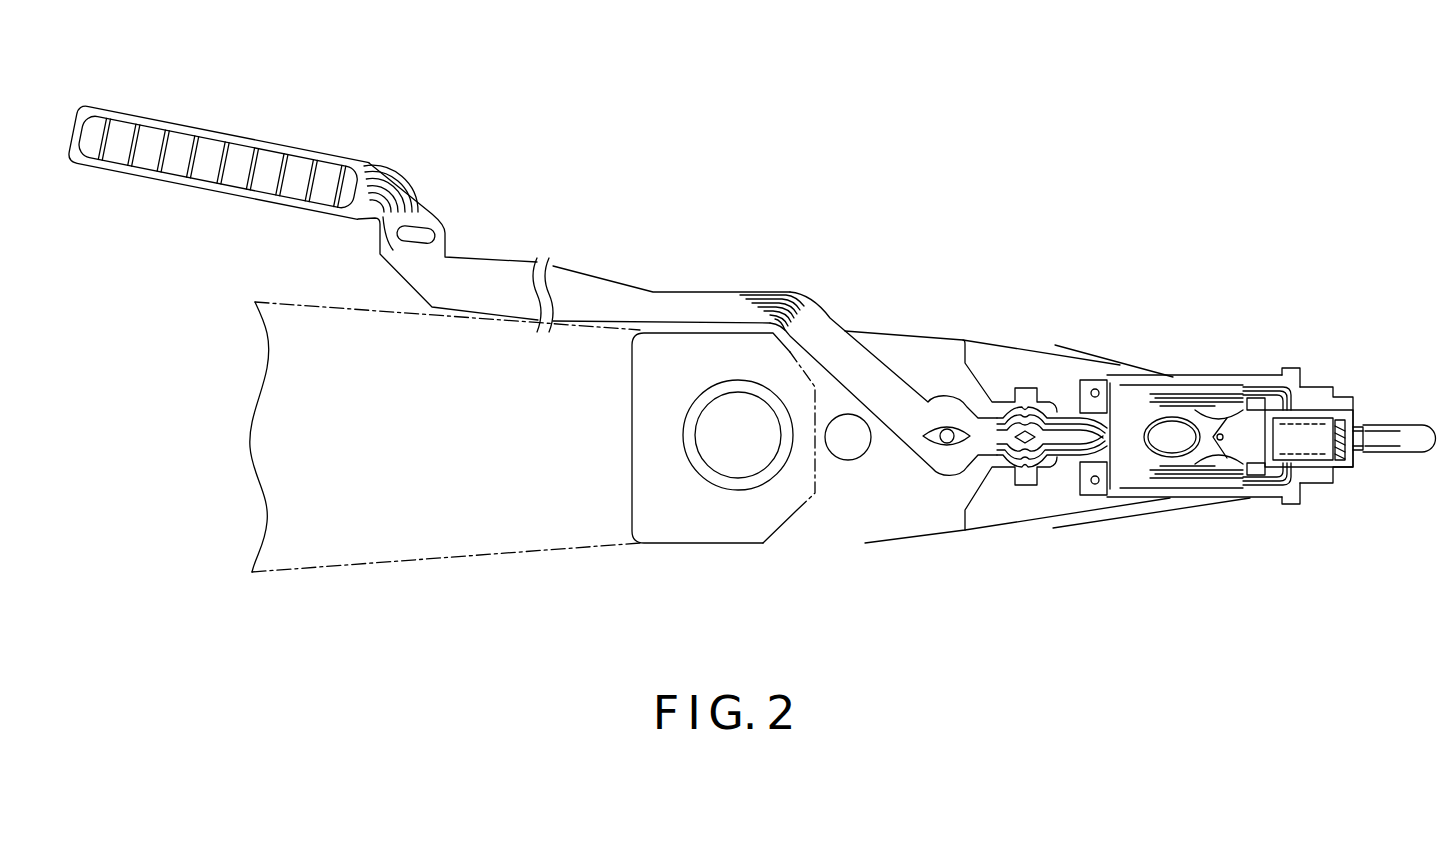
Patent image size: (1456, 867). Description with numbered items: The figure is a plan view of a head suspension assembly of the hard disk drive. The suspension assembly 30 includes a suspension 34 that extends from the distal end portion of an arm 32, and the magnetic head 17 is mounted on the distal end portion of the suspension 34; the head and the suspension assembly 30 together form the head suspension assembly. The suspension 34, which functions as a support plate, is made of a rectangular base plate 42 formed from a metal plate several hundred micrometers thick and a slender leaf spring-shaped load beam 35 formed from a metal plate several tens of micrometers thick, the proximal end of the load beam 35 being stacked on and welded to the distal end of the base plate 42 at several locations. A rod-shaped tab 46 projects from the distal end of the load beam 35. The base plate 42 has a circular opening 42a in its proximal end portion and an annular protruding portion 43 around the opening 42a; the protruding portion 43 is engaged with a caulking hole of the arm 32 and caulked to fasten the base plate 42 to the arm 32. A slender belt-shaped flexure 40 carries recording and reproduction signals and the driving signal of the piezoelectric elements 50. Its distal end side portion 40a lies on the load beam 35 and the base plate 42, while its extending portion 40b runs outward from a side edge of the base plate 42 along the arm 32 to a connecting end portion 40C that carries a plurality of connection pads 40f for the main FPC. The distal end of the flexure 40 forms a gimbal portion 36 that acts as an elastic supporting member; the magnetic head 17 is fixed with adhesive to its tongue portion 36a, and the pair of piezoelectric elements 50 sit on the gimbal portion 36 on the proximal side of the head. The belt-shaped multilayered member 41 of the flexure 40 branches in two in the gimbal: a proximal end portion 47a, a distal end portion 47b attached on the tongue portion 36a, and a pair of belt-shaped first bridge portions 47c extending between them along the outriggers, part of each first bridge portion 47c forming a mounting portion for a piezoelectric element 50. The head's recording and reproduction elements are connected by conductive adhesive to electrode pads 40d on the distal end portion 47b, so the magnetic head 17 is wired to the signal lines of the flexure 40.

The suspension assembly 30 is at (1120, 257).
The arm 32 is at (462, 543).
The suspension 34 is at (822, 597).
The load beam 35 is at (1060, 502).
The gimbal portion 36 is at (1098, 550).
The tongue portion 36a is at (1307, 413).
The flexure 40 is at (855, 357).
The distal end side portion 40a is at (1070, 424).
The extending portion 40b is at (598, 302).
The connecting end portion 40C is at (319, 157).
The electrode pads 40d is at (1348, 437).
The connection pads 40f is at (208, 178).
The multilayered member 41 is at (1124, 377).
The base plate 42 is at (852, 525).
The circular opening 42a is at (735, 463).
The annular protruding portion 43 is at (707, 477).
The rod-shaped tab 46 is at (1403, 433).
The proximal end portion 47a is at (1190, 470).
The distal end portion 47b is at (1352, 423).
The first bridge portions 47c is at (1227, 490).
The piezoelectric elements 50 is at (1263, 476).
The magnetic head 17 is at (1317, 437).